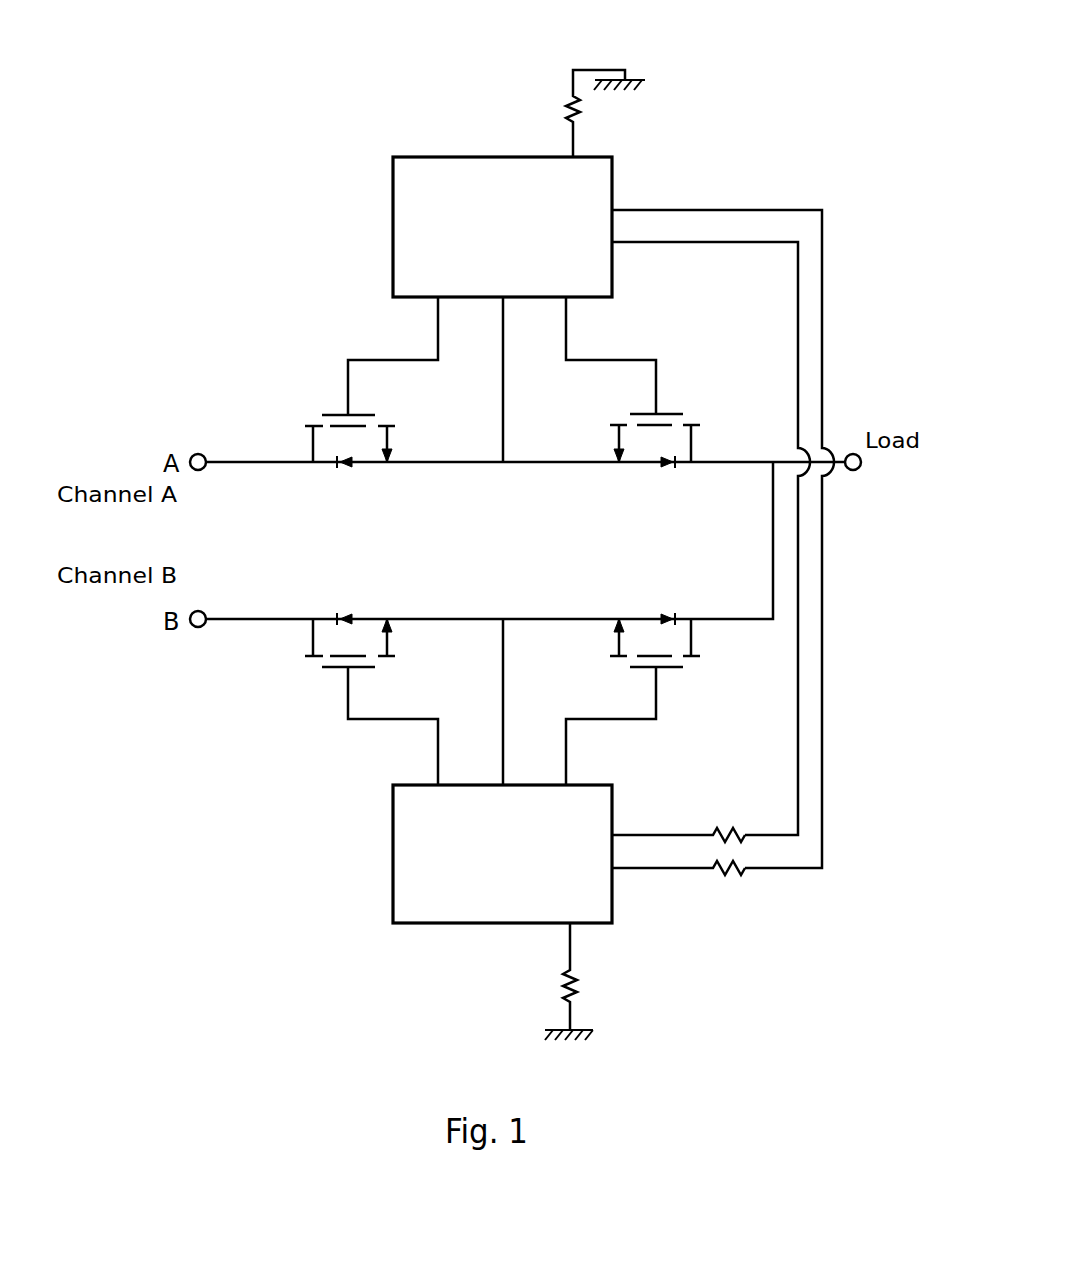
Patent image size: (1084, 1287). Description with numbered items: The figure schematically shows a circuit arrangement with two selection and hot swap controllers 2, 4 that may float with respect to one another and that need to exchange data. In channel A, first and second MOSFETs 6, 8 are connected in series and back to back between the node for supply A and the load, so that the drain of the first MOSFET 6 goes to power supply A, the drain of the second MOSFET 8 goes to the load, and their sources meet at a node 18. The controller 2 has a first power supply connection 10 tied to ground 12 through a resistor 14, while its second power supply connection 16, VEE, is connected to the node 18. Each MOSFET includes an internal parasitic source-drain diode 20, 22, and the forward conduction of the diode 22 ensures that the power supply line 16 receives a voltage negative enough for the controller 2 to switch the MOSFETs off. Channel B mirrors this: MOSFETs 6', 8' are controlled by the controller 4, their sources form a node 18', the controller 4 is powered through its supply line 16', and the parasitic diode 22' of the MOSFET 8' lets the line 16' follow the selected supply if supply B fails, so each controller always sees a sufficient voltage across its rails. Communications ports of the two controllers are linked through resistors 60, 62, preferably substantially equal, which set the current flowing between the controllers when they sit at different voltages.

The selection and hot swap controller 2 is at (612, 185).
The selection and hot swap controller 4 is at (612, 903).
The first MOSFET 6 is at (350, 395).
The second MOSFET 8 is at (650, 379).
The first power supply connection 10 is at (570, 150).
The ground 12 is at (640, 82).
The resistor 14 is at (568, 100).
The second power supply connection 16 is at (526, 323).
The node 18 is at (522, 419).
The internal source-drain diode 20 is at (346, 470).
The internal source-drain diode 22 is at (637, 477).
The MOSFET 6' is at (352, 679).
The MOSFET 8' is at (633, 679).
The power supply line 16' is at (528, 760).
The node 18' is at (525, 666).
The parasitic diode 22' is at (695, 599).
The resistor 60 is at (728, 828).
The resistor 62 is at (732, 875).